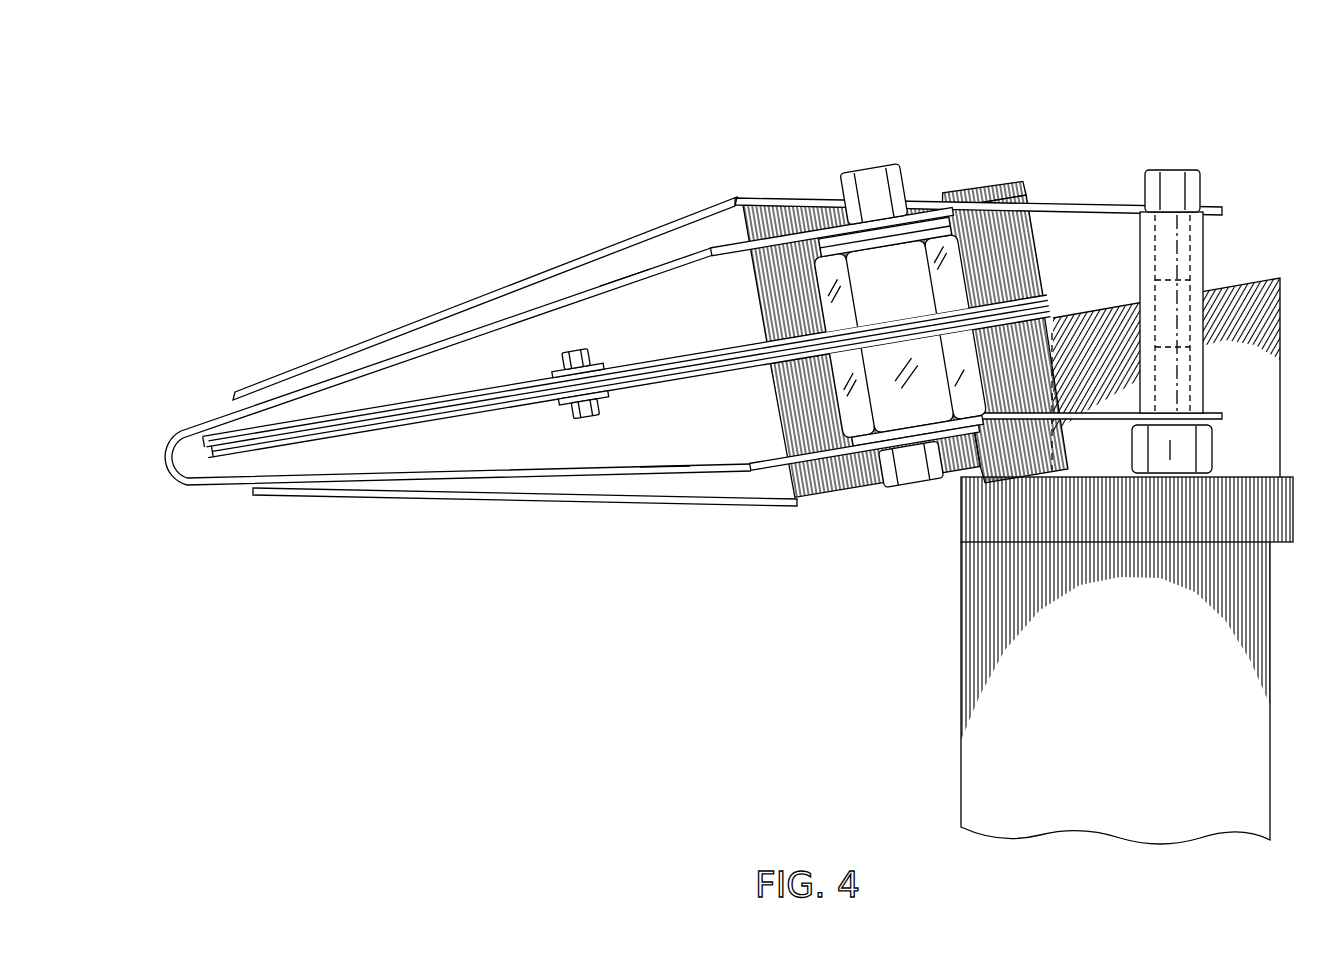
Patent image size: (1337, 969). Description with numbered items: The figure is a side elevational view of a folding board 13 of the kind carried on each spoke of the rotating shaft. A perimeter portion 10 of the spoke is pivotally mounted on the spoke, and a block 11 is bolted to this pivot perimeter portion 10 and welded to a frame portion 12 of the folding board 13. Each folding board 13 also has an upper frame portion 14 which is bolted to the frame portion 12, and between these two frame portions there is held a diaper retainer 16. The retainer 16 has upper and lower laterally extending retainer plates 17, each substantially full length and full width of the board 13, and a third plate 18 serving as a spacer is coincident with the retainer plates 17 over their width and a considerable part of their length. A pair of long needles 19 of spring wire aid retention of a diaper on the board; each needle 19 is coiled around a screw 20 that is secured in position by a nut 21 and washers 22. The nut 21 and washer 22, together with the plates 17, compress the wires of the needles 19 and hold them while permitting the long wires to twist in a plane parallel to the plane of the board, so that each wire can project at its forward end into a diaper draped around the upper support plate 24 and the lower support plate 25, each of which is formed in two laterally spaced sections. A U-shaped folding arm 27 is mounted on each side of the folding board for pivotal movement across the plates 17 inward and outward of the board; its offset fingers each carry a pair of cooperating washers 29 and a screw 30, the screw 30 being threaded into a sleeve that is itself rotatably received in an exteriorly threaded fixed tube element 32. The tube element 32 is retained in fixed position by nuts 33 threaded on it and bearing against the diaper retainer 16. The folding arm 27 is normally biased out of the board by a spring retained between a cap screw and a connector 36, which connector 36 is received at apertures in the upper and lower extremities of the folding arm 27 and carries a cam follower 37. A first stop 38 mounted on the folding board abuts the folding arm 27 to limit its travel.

The perimeter portion 10 is at (1124, 663).
The block 11 is at (1254, 390).
The frame portion 12 is at (1005, 463).
The folding board 13 is at (992, 141).
The upper frame portion 14 is at (790, 215).
The diaper retainer 16 is at (370, 440).
The retainer plates 17 is at (742, 345).
The third plate 18 is at (800, 445).
The needles 19 is at (232, 452).
The screw 20 is at (565, 355).
The nut 21 is at (565, 410).
The washers 22 is at (590, 365).
The upper support plate 24 is at (382, 338).
The lower support plate 25 is at (578, 492).
The folding arm 27 is at (625, 275).
The washers 29 is at (785, 245).
The screw 30 is at (880, 178).
The tube element 32 is at (985, 190).
The nuts 33 is at (908, 282).
The connector 36 is at (1197, 265).
The cam follower 37 is at (1180, 462).
The first stop 38 is at (996, 265).